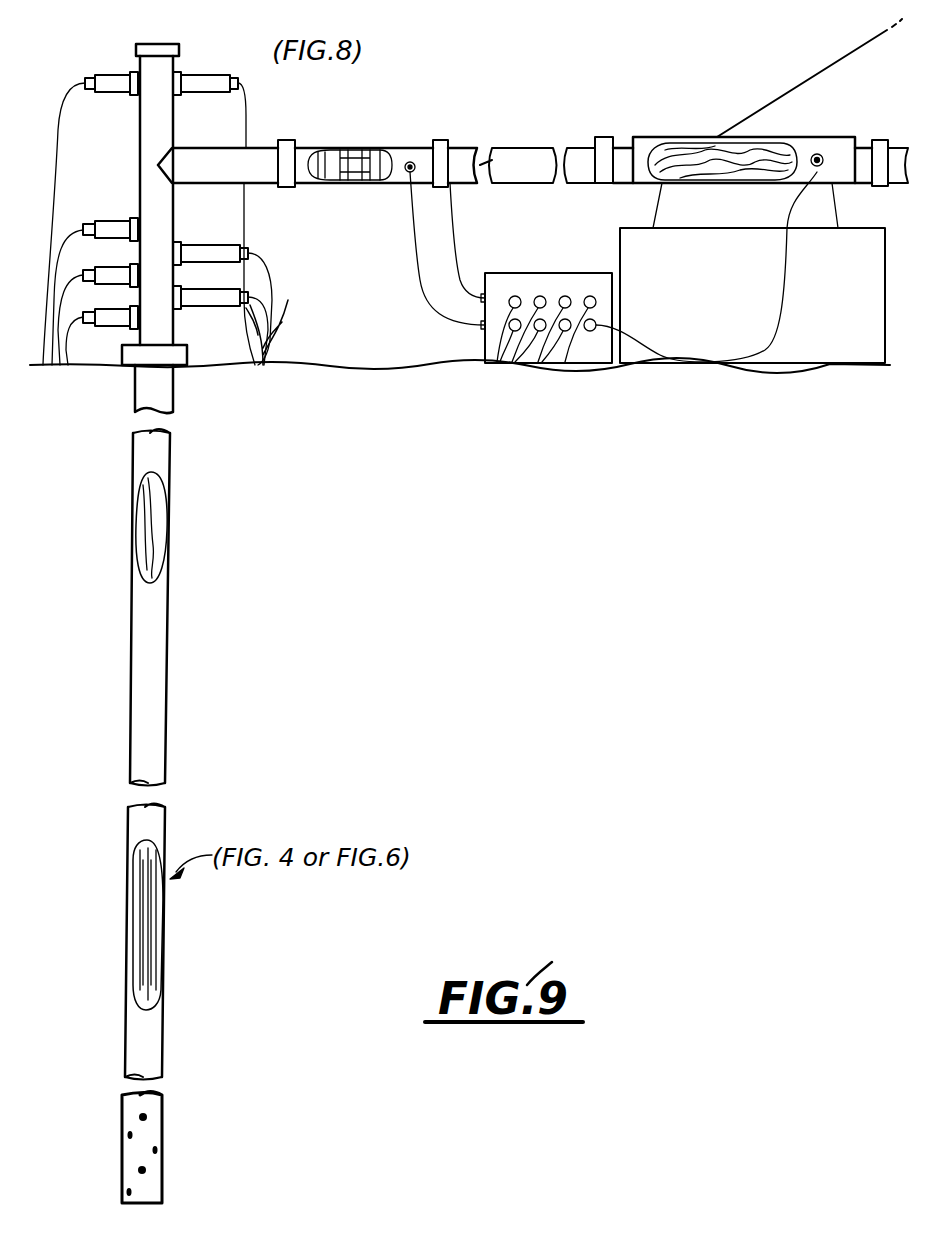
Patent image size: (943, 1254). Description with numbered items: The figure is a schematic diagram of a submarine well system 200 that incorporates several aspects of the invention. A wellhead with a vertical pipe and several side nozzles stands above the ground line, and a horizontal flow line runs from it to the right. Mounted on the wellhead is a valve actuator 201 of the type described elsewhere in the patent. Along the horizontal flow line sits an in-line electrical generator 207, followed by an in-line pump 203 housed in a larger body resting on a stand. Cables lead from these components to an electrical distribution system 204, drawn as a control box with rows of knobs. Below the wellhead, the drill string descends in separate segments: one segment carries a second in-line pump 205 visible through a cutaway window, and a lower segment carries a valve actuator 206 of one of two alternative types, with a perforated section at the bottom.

The submarine well system 200 is at (480, 140).
The valve actuator 201 is at (203, 75).
The in-line pump 203 is at (693, 137).
The electrical distribution system 204 is at (507, 270).
The in-line pump 205 is at (170, 558).
The valve actuator 206 is at (165, 925).
The in-line electrical generator 207 is at (358, 146).